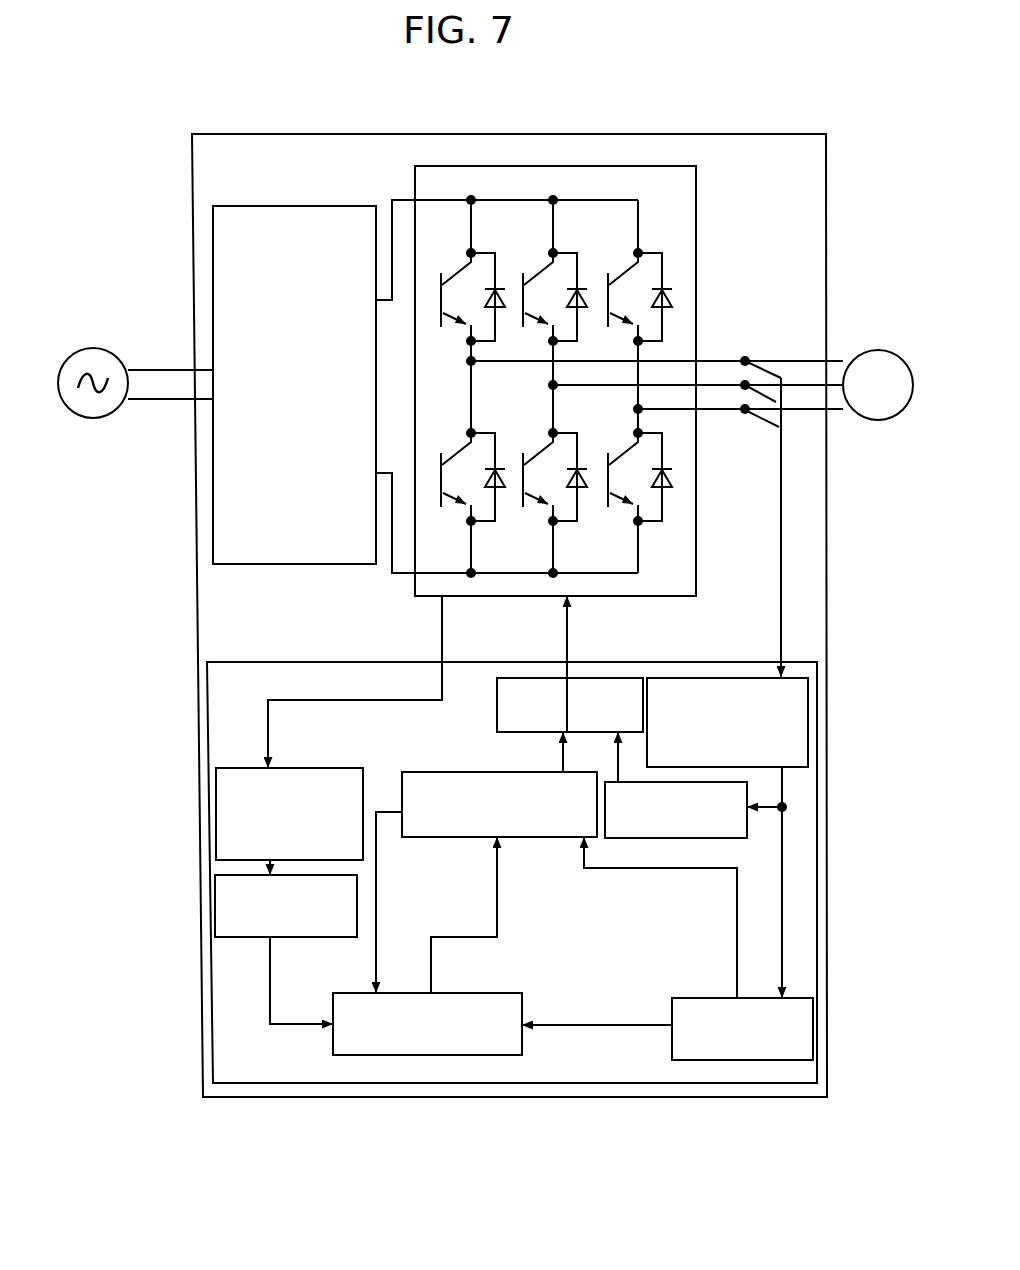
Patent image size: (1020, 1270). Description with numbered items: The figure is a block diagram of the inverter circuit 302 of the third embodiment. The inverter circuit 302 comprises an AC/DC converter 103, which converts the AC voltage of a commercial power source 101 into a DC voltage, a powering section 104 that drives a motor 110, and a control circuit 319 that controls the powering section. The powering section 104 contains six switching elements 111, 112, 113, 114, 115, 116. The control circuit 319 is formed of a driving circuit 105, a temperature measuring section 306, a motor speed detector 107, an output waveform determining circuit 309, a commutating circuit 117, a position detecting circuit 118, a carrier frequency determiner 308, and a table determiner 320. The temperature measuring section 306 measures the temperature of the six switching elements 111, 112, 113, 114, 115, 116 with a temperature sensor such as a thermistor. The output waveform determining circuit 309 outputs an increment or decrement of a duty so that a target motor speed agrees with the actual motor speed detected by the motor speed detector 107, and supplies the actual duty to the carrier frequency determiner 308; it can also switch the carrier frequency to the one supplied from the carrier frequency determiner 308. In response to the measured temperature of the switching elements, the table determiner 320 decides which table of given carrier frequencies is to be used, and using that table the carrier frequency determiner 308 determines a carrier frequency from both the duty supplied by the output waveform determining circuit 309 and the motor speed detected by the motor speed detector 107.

The commercial power source 101 is at (93, 418).
The AC/DC converter 103 is at (297, 564).
The powering section 104 is at (546, 365).
The driving circuit 105 is at (605, 678).
The motor speed detector 107 is at (813, 998).
The motor 110 is at (878, 420).
The switching element 111 is at (455, 275).
The switching element 112 is at (537, 275).
The switching element 113 is at (621, 275).
The switching element 114 is at (452, 490).
The switching element 115 is at (533, 490).
The switching element 116 is at (617, 490).
The commutating circuit 117 is at (670, 838).
The position detecting circuit 118 is at (808, 712).
The inverter circuit 302 is at (198, 825).
The temperature measuring section 306 is at (215, 818).
The carrier frequency determiner 308 is at (392, 1055).
The output waveform determining circuit 309 is at (480, 768).
The control circuit 319 is at (212, 938).
The table determiner 320 is at (240, 938).